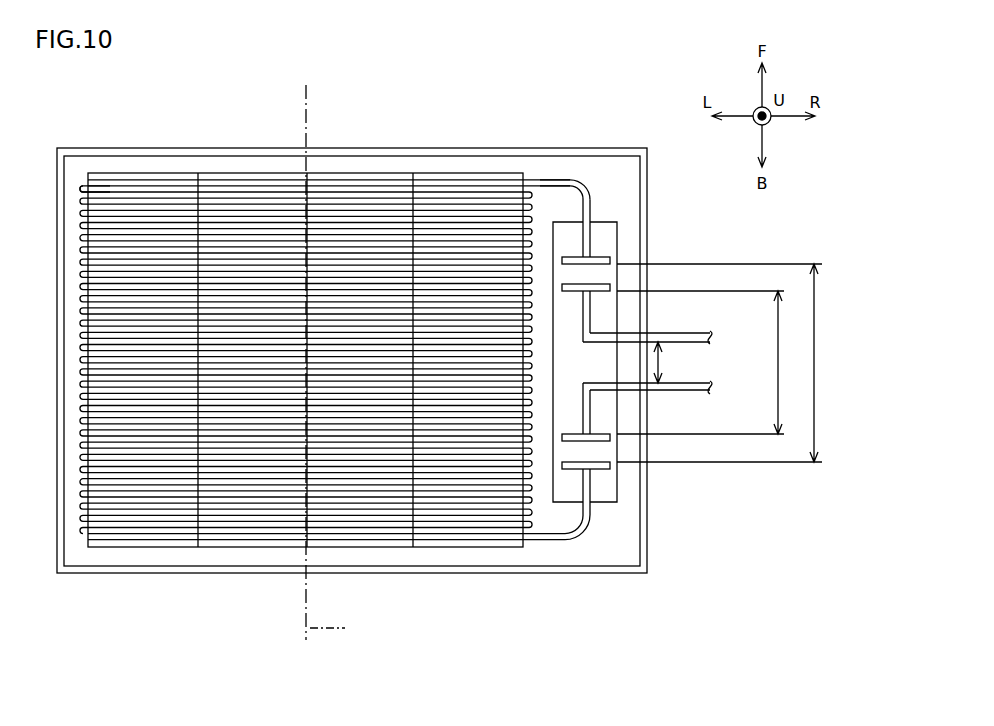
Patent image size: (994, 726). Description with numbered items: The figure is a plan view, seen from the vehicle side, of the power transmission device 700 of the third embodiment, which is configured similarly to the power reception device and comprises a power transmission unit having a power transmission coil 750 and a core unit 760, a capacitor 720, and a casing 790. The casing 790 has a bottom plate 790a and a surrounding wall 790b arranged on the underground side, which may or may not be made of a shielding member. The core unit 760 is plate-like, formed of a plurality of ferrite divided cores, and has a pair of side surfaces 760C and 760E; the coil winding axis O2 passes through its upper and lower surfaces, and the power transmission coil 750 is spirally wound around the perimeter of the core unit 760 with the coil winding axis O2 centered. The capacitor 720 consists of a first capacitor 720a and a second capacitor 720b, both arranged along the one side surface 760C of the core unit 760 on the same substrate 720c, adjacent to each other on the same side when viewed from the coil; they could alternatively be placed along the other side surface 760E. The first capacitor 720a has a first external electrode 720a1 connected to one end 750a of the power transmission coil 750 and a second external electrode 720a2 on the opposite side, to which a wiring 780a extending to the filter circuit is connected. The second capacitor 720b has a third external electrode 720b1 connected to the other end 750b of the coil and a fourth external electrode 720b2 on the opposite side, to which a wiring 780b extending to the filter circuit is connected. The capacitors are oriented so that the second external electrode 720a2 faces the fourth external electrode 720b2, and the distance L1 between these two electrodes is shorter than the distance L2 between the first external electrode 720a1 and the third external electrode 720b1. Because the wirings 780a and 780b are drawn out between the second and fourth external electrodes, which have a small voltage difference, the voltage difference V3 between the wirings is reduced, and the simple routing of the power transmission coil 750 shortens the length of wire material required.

The power transmission device 700 is at (360, 108).
The power transmission coil 750 is at (345, 186).
The core unit 760 is at (257, 180).
The side surface 760E is at (90, 182).
The side surface 760C is at (526, 178).
The casing 790 is at (398, 311).
The bottom plate 790a is at (450, 327).
The surrounding wall 790b is at (405, 152).
The one end of power transmission coil 750a is at (585, 194).
The other end of power transmission coil 750b is at (586, 532).
The capacitor 720 is at (605, 220).
The first capacitor 720a is at (641, 271).
The first external electrode 720a1 is at (606, 257).
The second external electrode 720a2 is at (604, 292).
The second capacitor 720b is at (643, 458).
The third external electrode 720b1 is at (604, 468).
The fourth external electrode 720b2 is at (604, 434).
The substrate 720c is at (607, 490).
The wiring 780a is at (700, 336).
The wiring 780b is at (690, 392).
The voltage difference V3 is at (671, 362).
The distance between second and fourth external electrodes L1 is at (709, 362).
The distance between first and third external electrodes L2 is at (729, 363).
The coil winding axis O2 is at (339, 362).